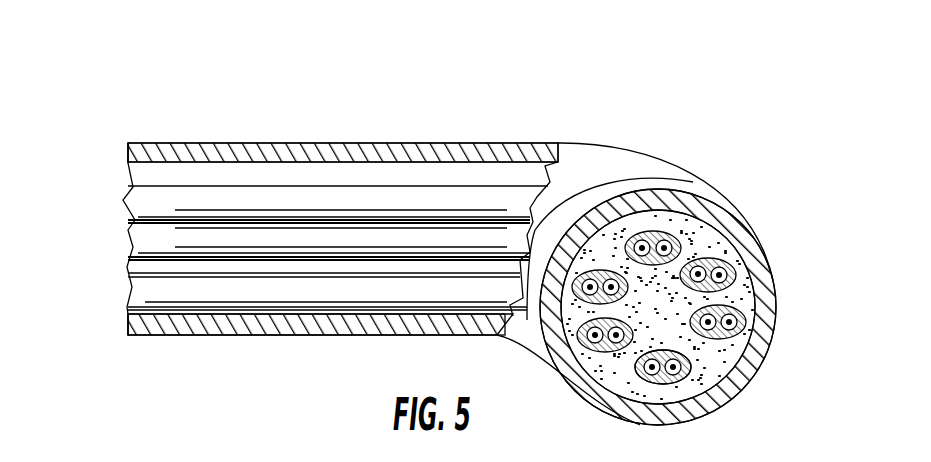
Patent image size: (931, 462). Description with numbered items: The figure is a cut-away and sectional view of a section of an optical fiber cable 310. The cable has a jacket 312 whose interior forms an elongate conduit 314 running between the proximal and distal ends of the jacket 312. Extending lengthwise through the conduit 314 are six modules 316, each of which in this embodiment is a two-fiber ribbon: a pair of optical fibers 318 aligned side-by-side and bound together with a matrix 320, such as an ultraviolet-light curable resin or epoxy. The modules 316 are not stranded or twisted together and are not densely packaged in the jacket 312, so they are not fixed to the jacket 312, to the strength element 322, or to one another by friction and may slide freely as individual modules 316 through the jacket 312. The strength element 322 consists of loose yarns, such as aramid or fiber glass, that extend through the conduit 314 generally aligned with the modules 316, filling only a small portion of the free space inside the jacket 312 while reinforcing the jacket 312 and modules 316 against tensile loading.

The optical fiber cable 310 is at (96, 114).
The jacket 312 is at (513, 152).
The conduit 314 is at (267, 163).
The module 316 is at (437, 197).
The optical fiber 318 is at (722, 268).
The matrix 320 is at (670, 378).
The strength element 322 is at (707, 362).